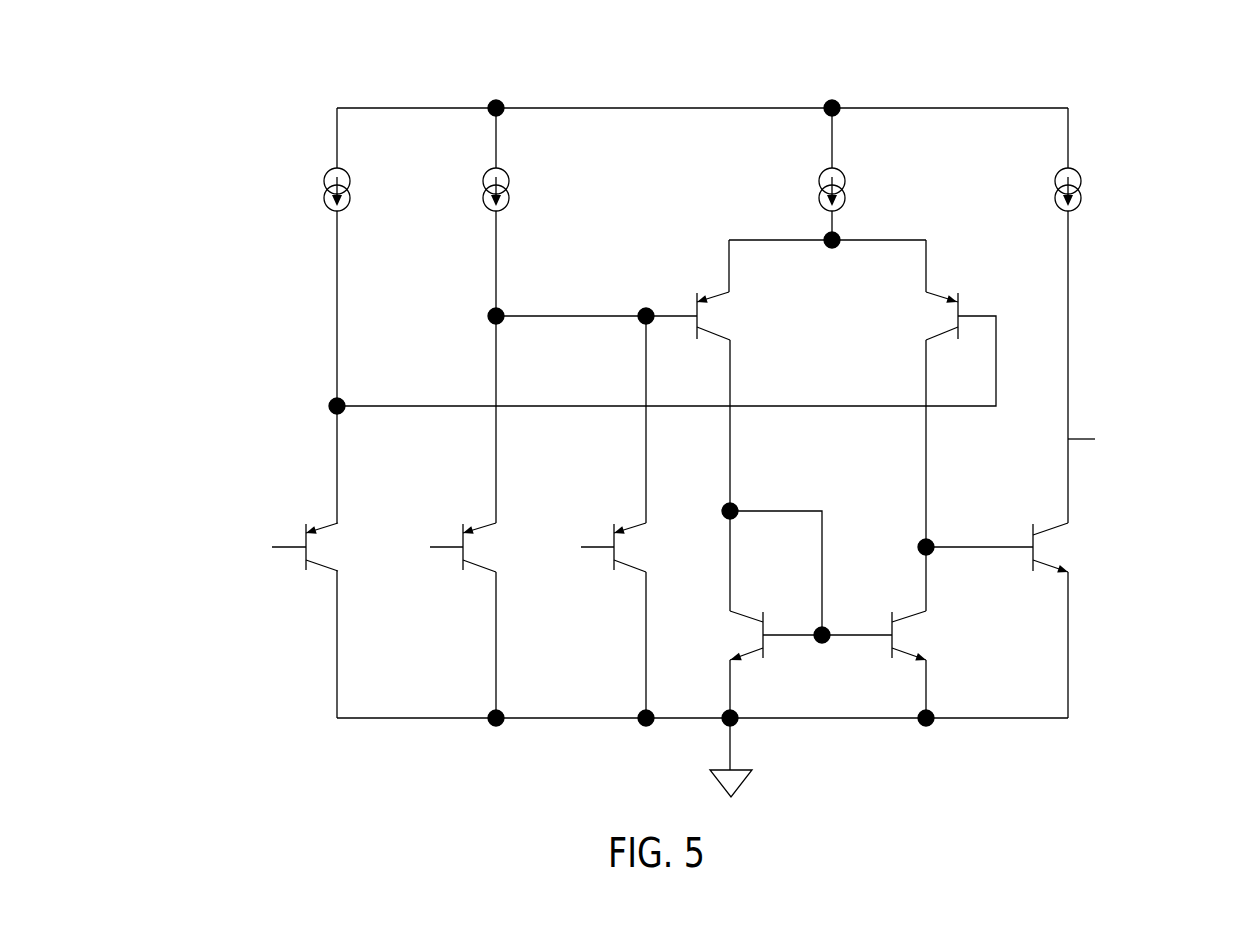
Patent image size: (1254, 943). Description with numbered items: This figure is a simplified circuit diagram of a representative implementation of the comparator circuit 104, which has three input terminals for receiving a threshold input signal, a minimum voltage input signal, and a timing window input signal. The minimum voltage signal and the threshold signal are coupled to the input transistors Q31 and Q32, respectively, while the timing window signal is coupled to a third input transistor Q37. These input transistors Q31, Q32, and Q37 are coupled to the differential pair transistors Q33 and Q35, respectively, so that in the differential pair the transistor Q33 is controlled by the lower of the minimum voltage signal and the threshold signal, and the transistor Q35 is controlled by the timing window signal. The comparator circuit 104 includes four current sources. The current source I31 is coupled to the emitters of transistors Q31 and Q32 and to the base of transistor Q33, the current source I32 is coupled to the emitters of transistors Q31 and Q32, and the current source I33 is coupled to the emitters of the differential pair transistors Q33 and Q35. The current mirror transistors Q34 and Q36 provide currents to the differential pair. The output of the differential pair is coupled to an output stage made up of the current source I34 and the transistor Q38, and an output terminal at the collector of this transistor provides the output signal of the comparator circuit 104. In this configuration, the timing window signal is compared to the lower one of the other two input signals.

The comparator circuit 104 is at (1151, 97).
The current source I31 is at (360, 159).
The current source I32 is at (518, 159).
The current source I33 is at (849, 159).
The current source I34 is at (1088, 159).
The input transistor Q31 is at (463, 567).
The input transistor Q32 is at (613, 567).
The differential pair transistor Q33 is at (740, 316).
The current mirror transistor Q34 is at (726, 635).
The differential pair transistor Q35 is at (915, 316).
The current mirror transistor Q36 is at (936, 636).
The third input transistor Q37 is at (301, 559).
The output stage transistor Q38 is at (1045, 566).